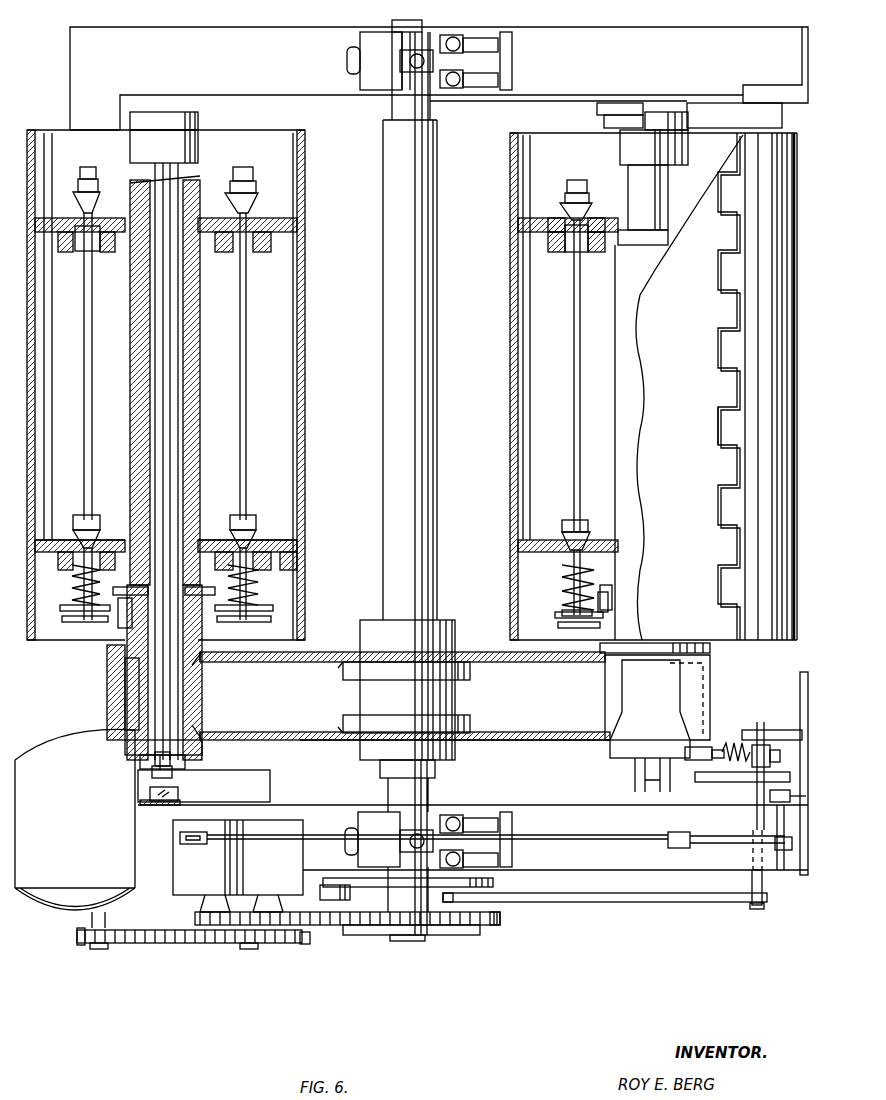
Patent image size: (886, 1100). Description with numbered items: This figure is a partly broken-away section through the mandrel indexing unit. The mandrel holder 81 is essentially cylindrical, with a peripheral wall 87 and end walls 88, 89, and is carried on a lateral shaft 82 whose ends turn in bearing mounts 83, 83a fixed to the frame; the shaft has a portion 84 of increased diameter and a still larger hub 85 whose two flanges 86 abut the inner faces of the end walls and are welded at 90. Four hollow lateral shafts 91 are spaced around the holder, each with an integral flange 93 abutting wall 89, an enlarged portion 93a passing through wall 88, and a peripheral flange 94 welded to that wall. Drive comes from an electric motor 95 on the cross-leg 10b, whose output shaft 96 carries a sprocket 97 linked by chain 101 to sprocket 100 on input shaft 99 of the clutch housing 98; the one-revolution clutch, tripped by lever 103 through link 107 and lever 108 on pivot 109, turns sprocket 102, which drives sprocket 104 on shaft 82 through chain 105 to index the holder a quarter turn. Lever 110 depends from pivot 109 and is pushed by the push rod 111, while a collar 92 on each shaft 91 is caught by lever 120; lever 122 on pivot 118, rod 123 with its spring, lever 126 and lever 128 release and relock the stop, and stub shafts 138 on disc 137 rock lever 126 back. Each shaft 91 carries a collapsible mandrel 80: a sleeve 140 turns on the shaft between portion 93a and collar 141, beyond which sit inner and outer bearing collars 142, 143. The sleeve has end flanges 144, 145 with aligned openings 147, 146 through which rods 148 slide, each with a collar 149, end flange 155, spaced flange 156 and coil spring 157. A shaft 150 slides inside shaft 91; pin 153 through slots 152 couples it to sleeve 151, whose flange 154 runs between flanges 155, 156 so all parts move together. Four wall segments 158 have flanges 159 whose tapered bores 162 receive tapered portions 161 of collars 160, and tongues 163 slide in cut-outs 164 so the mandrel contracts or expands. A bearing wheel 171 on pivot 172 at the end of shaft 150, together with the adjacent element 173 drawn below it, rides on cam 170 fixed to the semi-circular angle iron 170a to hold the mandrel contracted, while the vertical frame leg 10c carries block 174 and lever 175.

The cross-leg 10b is at (586, 870).
The vertical leg 10c is at (808, 33).
The collapsible mandrel 80 is at (310, 203).
The mandrel holder 81 is at (565, 748).
The lateral shaft 82 is at (430, 800).
The bearing mount 83 is at (368, 38).
The bearing mount 83a is at (376, 816).
The shaft portion of increased diameter 84 is at (426, 366).
The mounting hub 85 is at (430, 670).
The flanges 86 is at (430, 670).
The peripheral wall 87 is at (108, 690).
The end wall 88 is at (335, 654).
The end wall 89 is at (322, 733).
The welds 90 is at (340, 666).
The hollow lateral shaft 91 is at (188, 388).
The collar 92 is at (204, 748).
The integral flange 93 is at (193, 730).
The enlarged portion 93a is at (198, 662).
The transverse peripheral flange 94 is at (108, 650).
The electric motor 95 is at (86, 838).
The output shaft 96 is at (100, 950).
The sprocket 97 is at (77, 943).
The clutch housing 98 is at (276, 877).
The input shaft 99 is at (250, 950).
The sprocket 100 is at (306, 945).
The sprocket chain 101 is at (172, 945).
The sprocket 102 is at (195, 918).
The clutch lever 103 is at (180, 838).
The sprocket 104 is at (500, 920).
The sprocket chain 105 is at (345, 936).
The link 107 is at (645, 842).
The lever 108 is at (730, 845).
The lateral pivot 109 is at (775, 728).
The lever 110 is at (758, 808).
The longitudinal push rod 111 is at (806, 796).
The lateral pivot 118 is at (757, 909).
The lever 120 is at (698, 762).
The lever 122 is at (760, 745).
The longitudinal rod 123 is at (734, 748).
The lever 126 is at (642, 903).
The lever 128 is at (744, 782).
The disc 137 is at (496, 882).
The stub shaft 138 is at (322, 890).
The sleeve 140 is at (200, 450).
The collar 141 is at (198, 226).
The inner bearing collar 142 is at (195, 150).
The outer bearing collar 143 is at (182, 118).
The end flange 144 is at (304, 550).
The end flange 145 is at (95, 255).
The openings 146 is at (258, 248).
The openings 147 is at (304, 540).
The rod 148 is at (247, 398).
The collar 149 is at (230, 256).
The shaft 150 is at (158, 700).
The sleeve 151 is at (114, 540).
The slots 152 is at (134, 605).
The pin 153 is at (145, 586).
The flange 154 is at (100, 622).
The outer end flange 155 is at (297, 615).
The flange 156 is at (298, 592).
The coil spring 157 is at (300, 578).
The peripheral wall segment 158 is at (303, 330).
The flanges 159 is at (295, 258).
The collars 160 is at (254, 180).
The tapered portions 161 is at (257, 206).
The tapered bores 162 is at (233, 196).
The end tongues 163 is at (725, 340).
The cut-outs 164 is at (735, 422).
The cam 170 is at (182, 792).
The semi-circular angle iron 170a is at (140, 802).
The bearing wheel 171 is at (155, 760).
The pivot 172 is at (162, 752).
The washer 173 is at (150, 773).
The block 174 is at (730, 115).
The lever 175 is at (620, 108).